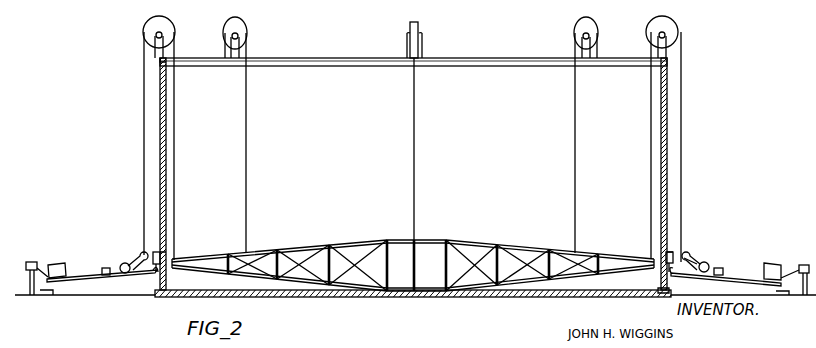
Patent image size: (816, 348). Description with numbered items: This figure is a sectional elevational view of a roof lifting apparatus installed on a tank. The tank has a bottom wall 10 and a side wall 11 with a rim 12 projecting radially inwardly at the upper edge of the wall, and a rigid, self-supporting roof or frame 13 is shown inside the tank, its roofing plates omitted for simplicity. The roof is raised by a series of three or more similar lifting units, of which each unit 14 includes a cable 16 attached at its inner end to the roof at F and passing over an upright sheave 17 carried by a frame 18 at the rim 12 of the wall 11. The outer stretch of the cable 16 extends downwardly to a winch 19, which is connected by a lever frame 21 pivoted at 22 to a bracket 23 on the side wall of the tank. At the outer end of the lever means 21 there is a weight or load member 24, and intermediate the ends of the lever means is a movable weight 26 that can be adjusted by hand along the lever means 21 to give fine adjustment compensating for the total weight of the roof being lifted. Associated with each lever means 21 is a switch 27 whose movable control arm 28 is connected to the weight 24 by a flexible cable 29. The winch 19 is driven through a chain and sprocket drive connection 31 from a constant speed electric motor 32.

The bottom wall 10 is at (325, 298).
The side wall 11 is at (166, 140).
The rim 12 is at (168, 58).
The roof frame 13 is at (437, 240).
The lifting unit 14 is at (95, 232).
The cable 16 is at (247, 127).
The upright sheave 17 is at (166, 22).
The frame 18 is at (147, 50).
The winch 19 is at (140, 250).
The lever frame 21 is at (95, 281).
The pivot 22 is at (156, 273).
The bracket 23 is at (161, 252).
The weight 24 is at (60, 265).
The movable weight 26 is at (106, 268).
The switch 27 is at (30, 262).
The control arm 28 is at (41, 266).
The flexible cable 29 is at (35, 295).
The chain and sprocket drive connection 31 is at (698, 262).
The electric motor 32 is at (127, 274).
The cable attachment point F is at (180, 257).